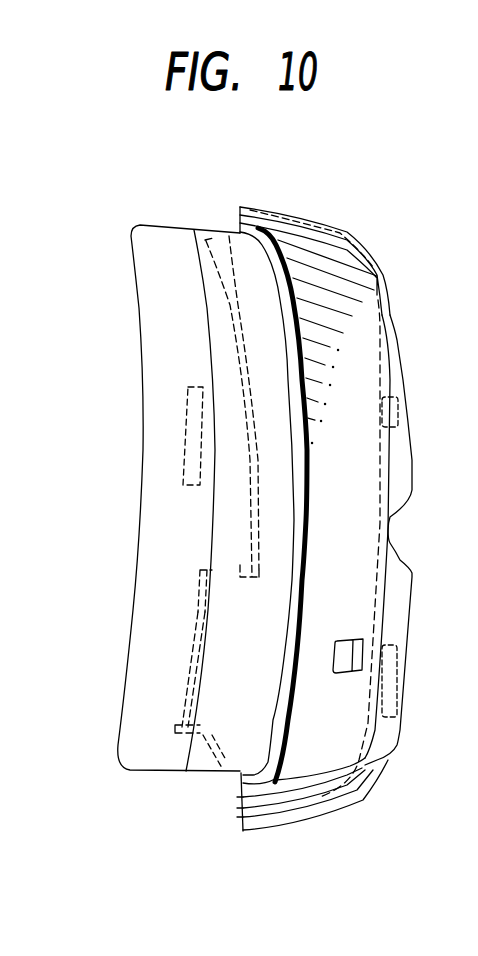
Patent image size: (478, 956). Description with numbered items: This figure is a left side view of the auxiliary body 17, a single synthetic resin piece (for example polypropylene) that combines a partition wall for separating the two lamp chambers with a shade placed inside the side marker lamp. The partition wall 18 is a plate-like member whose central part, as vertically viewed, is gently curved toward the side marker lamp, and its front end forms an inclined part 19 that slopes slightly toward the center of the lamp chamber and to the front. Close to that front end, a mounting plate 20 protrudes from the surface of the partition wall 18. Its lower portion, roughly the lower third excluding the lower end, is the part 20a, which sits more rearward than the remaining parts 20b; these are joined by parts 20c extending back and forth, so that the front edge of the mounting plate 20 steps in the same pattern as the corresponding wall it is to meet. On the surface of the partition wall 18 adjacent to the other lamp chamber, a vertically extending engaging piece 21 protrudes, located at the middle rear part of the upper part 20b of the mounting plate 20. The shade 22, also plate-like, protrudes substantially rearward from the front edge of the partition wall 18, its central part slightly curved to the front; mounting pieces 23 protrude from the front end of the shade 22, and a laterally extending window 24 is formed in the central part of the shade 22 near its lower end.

The auxiliary body 17 is at (363, 260).
The partition wall 18 is at (140, 225).
The inclined part 19 is at (280, 757).
The mounting plate 20 is at (229, 236).
The part of the mounting plate 20a is at (207, 330).
The remaining parts of the mounting plate 20b is at (182, 682).
The connecting parts 20c is at (240, 577).
The engaging piece 21 is at (185, 440).
The shade 22 is at (388, 283).
The mounting piece 23 is at (400, 397).
The window 24 is at (343, 643).